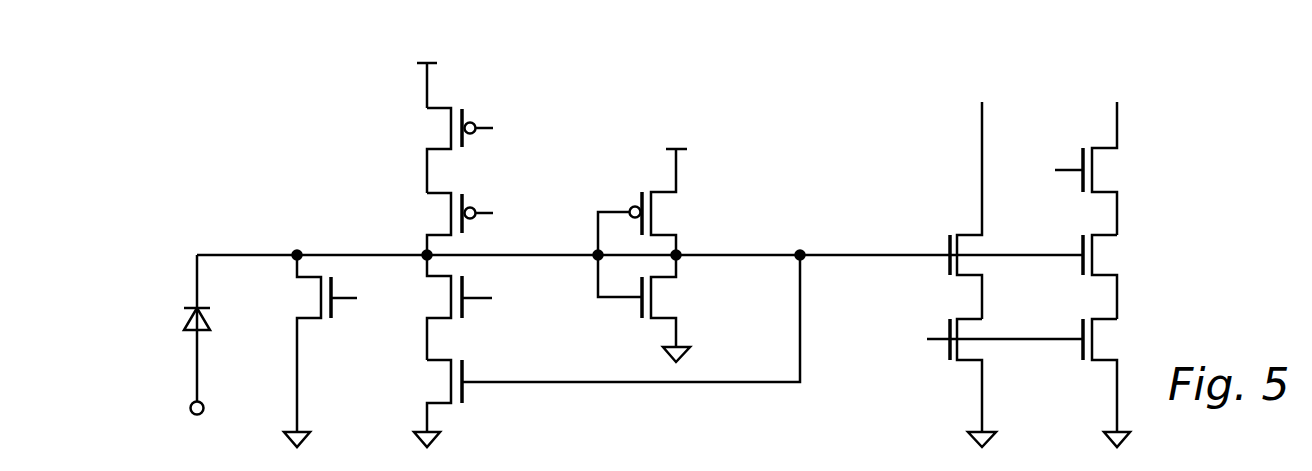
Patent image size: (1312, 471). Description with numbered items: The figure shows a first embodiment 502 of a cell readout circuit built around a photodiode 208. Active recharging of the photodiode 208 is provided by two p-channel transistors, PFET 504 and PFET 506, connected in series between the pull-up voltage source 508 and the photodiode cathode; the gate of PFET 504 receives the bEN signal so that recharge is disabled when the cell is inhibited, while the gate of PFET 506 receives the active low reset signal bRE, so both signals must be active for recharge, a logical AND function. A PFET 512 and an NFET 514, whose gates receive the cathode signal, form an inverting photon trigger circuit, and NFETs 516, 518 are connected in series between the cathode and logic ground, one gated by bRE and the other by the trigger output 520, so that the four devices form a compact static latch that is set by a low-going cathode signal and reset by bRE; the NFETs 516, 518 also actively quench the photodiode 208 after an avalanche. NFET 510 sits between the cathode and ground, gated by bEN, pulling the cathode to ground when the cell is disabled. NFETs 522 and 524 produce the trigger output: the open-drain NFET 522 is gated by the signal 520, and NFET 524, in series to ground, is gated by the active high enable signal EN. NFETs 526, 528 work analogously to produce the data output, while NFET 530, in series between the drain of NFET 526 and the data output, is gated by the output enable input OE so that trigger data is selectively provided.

The first embodiment of the cell readout circuit 502 is at (176, 158).
The photodiode 208 is at (170, 315).
The NFET 510 is at (300, 300).
The pull-up voltage source 508 is at (422, 65).
The PFET 504 is at (440, 128).
The PFET 506 is at (440, 213).
The NFET 516 is at (430, 300).
The NFET 518 is at (432, 385).
The PFET 512 is at (672, 213).
The NFET 514 is at (674, 300).
The output of the trigger circuit 520 is at (872, 255).
The NFET 522 is at (975, 242).
The NFET 524 is at (975, 350).
The NFET 526 is at (1113, 255).
The NFET 528 is at (1113, 340).
The NFET 530 is at (1113, 170).